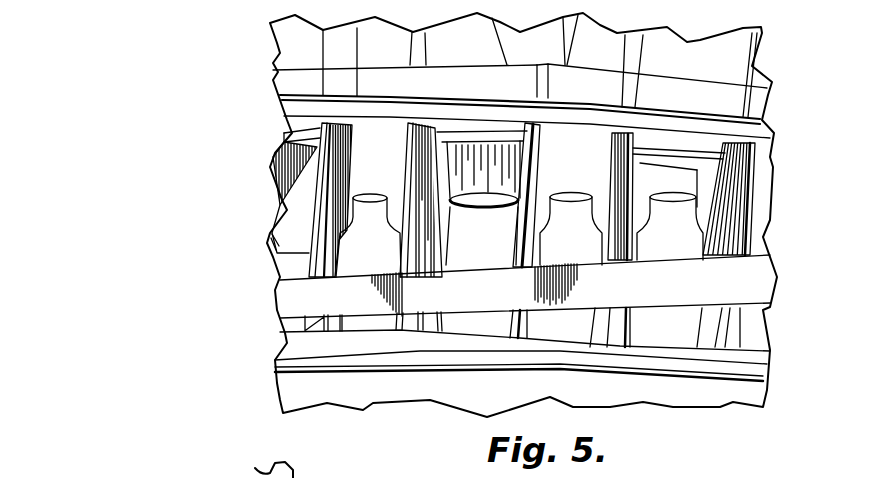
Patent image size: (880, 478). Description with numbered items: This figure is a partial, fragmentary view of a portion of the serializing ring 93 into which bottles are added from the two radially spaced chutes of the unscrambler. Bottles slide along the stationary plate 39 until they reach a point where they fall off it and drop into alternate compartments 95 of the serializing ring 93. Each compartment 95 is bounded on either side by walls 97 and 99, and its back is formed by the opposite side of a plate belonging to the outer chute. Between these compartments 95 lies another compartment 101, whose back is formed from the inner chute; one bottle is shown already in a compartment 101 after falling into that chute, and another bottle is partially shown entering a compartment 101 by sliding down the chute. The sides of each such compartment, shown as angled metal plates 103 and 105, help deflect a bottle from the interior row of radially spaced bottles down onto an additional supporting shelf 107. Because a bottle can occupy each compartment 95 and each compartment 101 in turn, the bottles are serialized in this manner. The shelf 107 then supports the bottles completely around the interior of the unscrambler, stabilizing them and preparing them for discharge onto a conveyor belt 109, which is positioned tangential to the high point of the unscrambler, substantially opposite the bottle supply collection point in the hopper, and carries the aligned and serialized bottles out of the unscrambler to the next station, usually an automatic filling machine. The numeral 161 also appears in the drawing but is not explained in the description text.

The stationary plate 39 is at (757, 127).
The serializing ring 93 is at (786, 219).
The compartment 95 is at (393, 127).
The wall 97 is at (410, 153).
The wall 99 is at (350, 152).
The compartment 101 is at (475, 125).
The compartment side 103 is at (635, 174).
The compartment side 105 is at (750, 167).
The supporting shelf 107 is at (357, 320).
The conveyor belt 109 is at (747, 358).
The end plate 161 is at (310, 127).